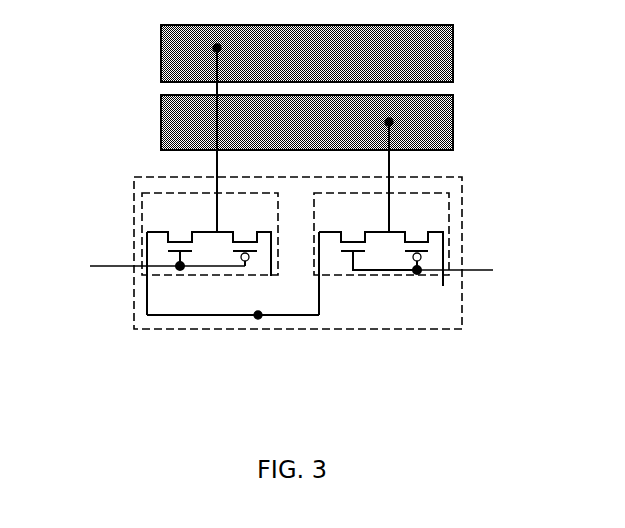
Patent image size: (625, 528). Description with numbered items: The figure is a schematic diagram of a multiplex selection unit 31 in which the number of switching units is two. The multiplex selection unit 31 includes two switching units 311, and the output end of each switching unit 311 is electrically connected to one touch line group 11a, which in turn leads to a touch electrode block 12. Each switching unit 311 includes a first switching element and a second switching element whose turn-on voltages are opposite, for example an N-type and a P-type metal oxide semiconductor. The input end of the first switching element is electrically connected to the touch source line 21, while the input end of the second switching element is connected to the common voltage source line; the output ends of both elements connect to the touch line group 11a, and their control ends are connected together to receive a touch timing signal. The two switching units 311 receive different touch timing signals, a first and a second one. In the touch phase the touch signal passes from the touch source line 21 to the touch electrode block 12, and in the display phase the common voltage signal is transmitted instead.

The touch electrode block 12 is at (437, 48).
The touch line group 11a is at (217, 86).
The multiplex selection unit 31 is at (134, 208).
The switching unit 311 is at (142, 243).
The touch source line 21 is at (258, 315).